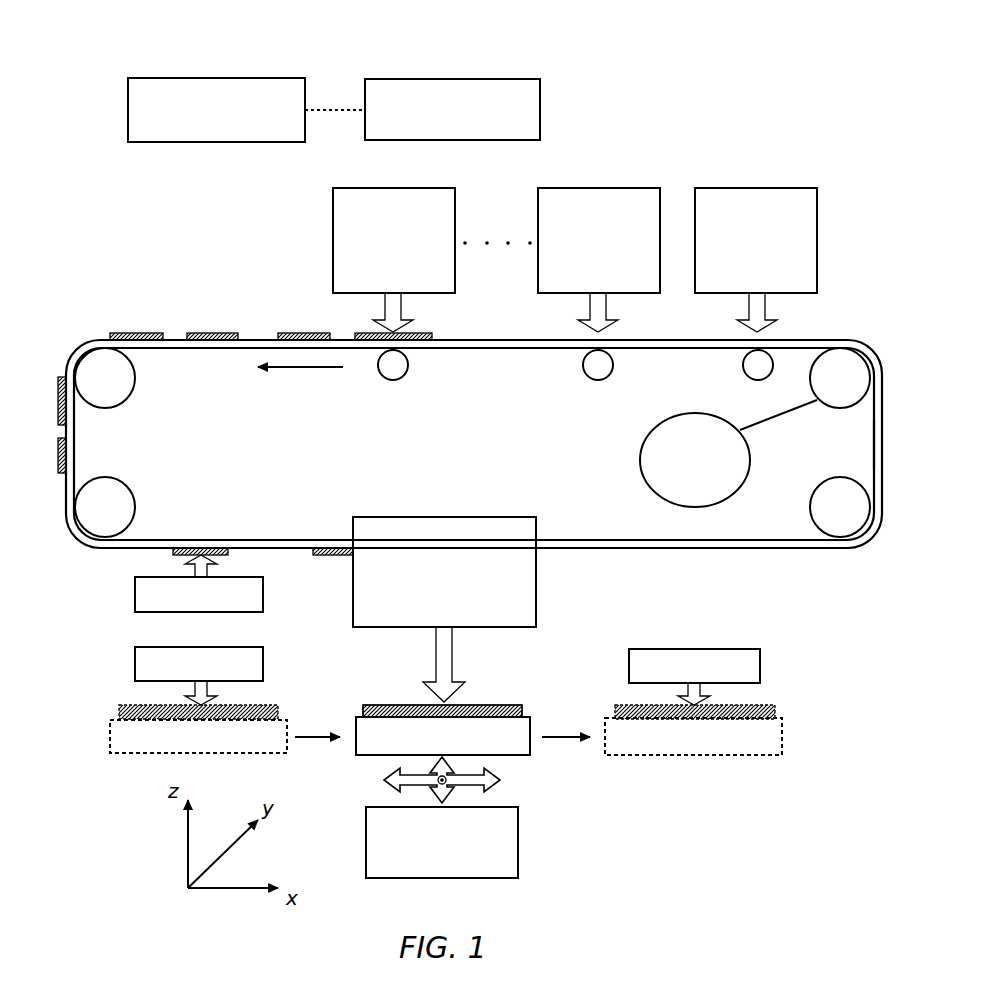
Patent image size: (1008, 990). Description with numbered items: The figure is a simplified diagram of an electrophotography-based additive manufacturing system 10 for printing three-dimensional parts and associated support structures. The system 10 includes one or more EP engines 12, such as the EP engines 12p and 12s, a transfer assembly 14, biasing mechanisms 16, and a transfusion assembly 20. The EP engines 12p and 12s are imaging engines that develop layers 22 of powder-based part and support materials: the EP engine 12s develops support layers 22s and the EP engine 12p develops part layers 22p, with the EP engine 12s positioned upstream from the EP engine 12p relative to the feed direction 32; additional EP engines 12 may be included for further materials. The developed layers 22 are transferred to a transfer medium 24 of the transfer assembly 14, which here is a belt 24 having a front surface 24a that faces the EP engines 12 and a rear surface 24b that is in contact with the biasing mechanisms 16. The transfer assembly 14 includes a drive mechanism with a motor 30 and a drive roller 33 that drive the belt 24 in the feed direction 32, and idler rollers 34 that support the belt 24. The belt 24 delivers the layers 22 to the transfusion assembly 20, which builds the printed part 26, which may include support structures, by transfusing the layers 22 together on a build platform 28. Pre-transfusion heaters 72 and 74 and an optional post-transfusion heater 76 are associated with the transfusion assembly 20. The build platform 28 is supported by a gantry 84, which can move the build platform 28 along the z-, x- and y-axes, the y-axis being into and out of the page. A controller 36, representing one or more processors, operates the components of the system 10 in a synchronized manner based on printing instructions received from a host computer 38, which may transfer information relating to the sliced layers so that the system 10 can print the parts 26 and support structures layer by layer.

The electrophotography-based additive manufacturing system 10 is at (748, 38).
The EP engine 12 is at (348, 194).
The EP engine for part material 12p is at (647, 194).
The EP engine for support material 12s is at (795, 194).
The transfer assembly 14 is at (852, 562).
The biasing mechanism 16 is at (393, 375).
The transfusion assembly 20 is at (368, 520).
The developed layer 22 is at (126, 332).
The part layer 22p is at (580, 333).
The support layer 22s is at (692, 333).
The transfer medium 24 is at (872, 444).
The front surface 24a is at (481, 336).
The rear surface 24b is at (481, 353).
The 3D part 26 is at (525, 686).
The build platform 28 is at (117, 750).
The motor 30 is at (643, 476).
The feed direction 32 is at (302, 377).
The drive roller 33 is at (838, 360).
The idler roller 34 is at (113, 386).
The controller 36 is at (515, 90).
The host computer 38 is at (145, 86).
The pre-transfusion heater 72 is at (140, 592).
The pre-transfusion heater 74 is at (140, 661).
The post-transfusion heater 76 is at (757, 661).
The gantry 84 is at (516, 830).